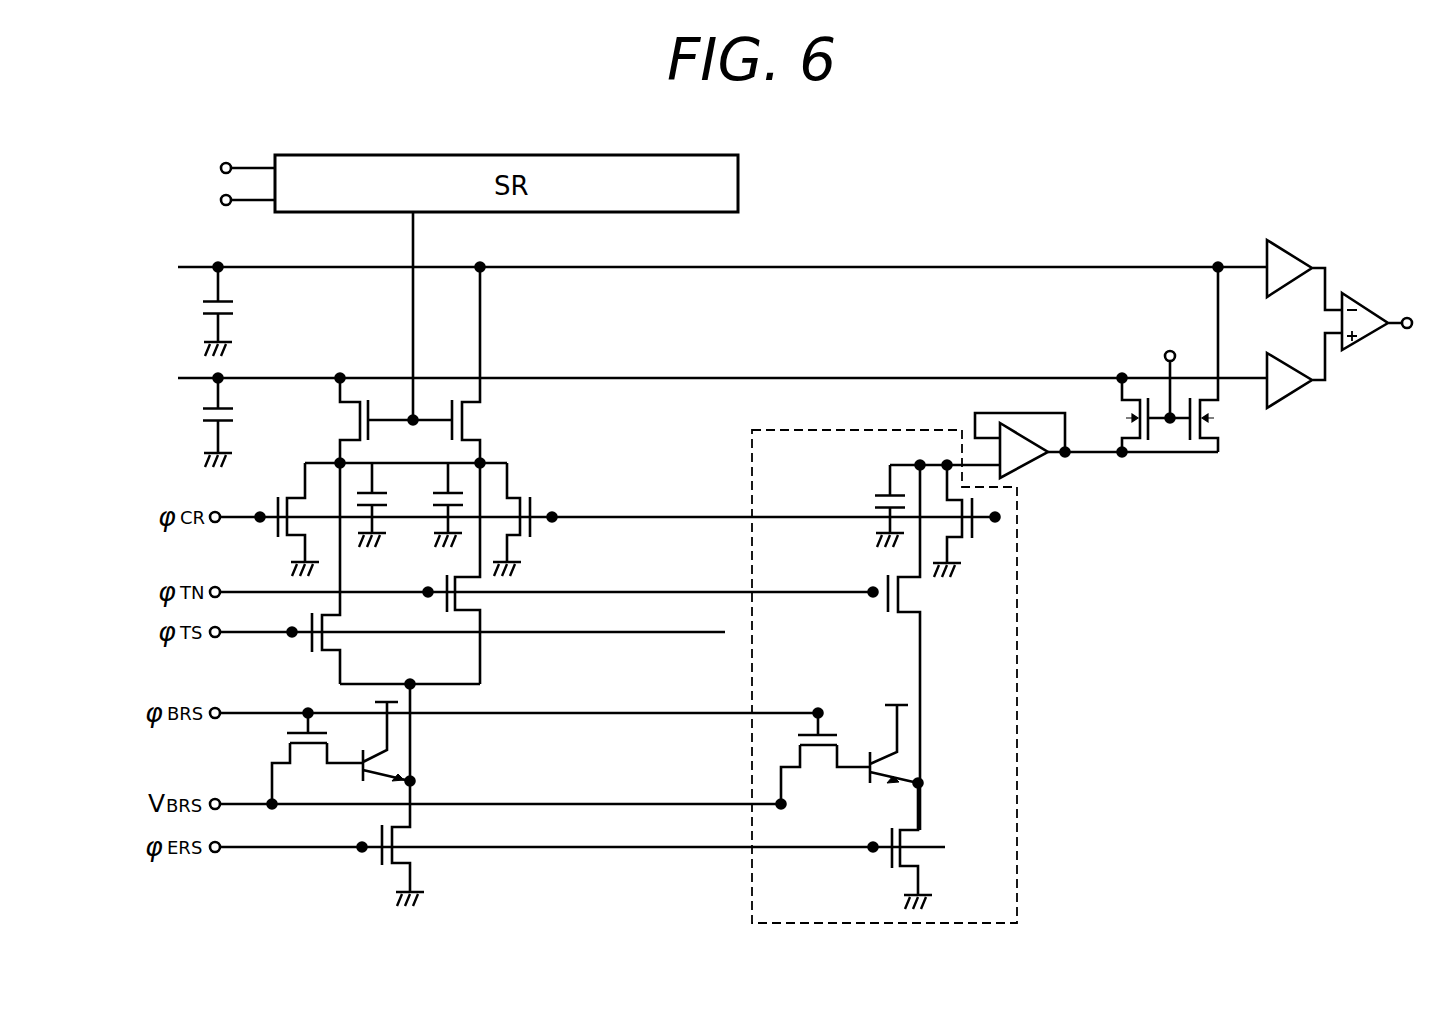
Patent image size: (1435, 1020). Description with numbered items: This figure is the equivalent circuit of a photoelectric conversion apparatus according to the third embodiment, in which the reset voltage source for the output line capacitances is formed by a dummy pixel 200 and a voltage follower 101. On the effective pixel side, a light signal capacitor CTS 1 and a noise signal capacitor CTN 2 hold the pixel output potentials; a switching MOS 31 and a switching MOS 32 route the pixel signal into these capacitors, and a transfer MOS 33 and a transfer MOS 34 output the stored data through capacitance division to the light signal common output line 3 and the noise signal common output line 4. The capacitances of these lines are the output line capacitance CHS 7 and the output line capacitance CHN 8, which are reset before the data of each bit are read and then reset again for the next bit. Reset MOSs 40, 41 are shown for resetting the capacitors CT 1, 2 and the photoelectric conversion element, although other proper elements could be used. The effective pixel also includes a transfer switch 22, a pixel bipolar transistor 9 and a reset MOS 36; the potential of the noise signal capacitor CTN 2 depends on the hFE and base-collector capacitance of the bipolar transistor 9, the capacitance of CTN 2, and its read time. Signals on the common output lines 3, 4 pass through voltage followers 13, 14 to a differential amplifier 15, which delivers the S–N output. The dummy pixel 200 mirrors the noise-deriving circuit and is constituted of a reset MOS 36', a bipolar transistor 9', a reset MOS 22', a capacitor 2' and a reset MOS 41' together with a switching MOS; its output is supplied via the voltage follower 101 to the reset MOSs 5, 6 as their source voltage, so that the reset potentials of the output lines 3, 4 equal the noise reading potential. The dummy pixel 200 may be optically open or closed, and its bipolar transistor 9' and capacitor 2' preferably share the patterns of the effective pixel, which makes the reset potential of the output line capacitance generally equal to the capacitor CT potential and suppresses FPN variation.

The light signal capacitor CTS 1 is at (378, 490).
The noise signal capacitor CTN 2 is at (440, 489).
The light signal common output line 3 is at (744, 378).
The noise signal common output line 4 is at (765, 267).
The reset MOS 5 is at (1128, 427).
The reset MOS 6 is at (1213, 425).
The output line capacitance CHS 7 is at (240, 414).
The output line capacitance CHN 8 is at (240, 306).
The pixel bipolar transistor 9 is at (406, 741).
The voltage follower 13 is at (1289, 244).
The voltage follower 14 is at (1294, 402).
The differential amplifier 15 is at (1362, 300).
The transfer switch 22 is at (317, 758).
The switching MOS 31 is at (334, 654).
The switching MOS 32 is at (470, 604).
The transfer MOS 33 is at (342, 433).
The transfer MOS 34 is at (470, 418).
The reset MOS 36 is at (435, 795).
The reset MOS 40 is at (290, 512).
The reset MOS 41 is at (527, 507).
The voltage follower 101 is at (1030, 465).
The dummy pixel 200 is at (1018, 667).
The noise signal capacitor CTN 2' is at (865, 500).
The bipolar transistor 9' is at (918, 744).
The reset MOS 22' is at (825, 773).
The reset MOS 36' is at (948, 846).
The reset MOS 41' is at (972, 534).